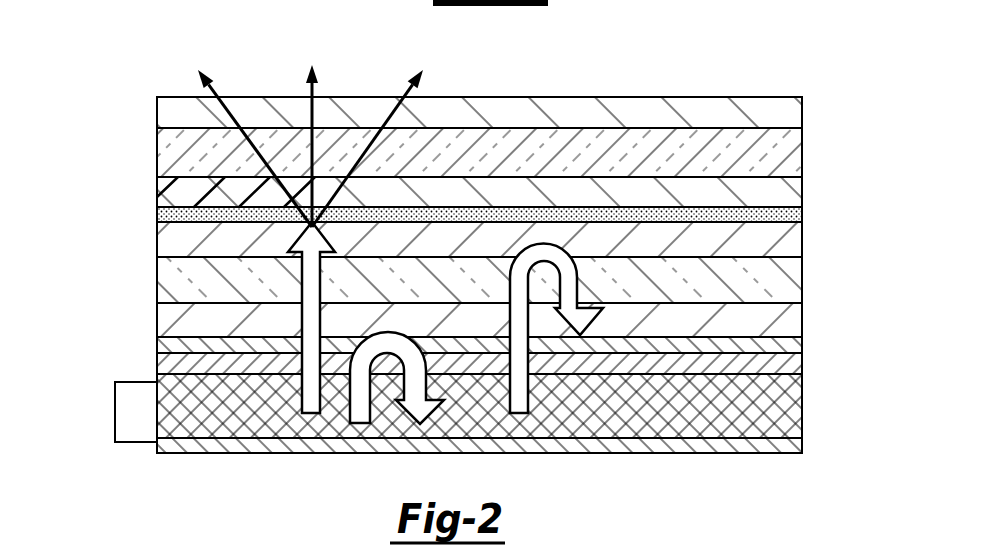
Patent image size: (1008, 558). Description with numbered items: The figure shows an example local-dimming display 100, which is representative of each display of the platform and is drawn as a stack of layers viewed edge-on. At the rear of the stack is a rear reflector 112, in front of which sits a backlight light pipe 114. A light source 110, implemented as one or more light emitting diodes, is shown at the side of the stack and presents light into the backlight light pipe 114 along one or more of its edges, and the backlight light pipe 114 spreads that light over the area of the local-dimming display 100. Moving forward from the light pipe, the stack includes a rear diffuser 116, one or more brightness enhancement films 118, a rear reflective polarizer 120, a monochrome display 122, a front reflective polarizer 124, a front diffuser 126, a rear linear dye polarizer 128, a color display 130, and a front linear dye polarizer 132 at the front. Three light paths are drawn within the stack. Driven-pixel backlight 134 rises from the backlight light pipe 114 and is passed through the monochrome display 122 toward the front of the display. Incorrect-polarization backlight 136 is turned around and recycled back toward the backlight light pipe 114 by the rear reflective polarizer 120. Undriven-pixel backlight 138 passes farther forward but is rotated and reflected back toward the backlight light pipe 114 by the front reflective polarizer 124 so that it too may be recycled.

The local-dimming display 100 is at (177, 30).
The light source 110 is at (115, 413).
The rear reflector 112 is at (772, 446).
The backlight light pipe 114 is at (787, 424).
The rear diffuser 116 is at (787, 361).
The brightness enhancement films 118 is at (787, 347).
The rear reflective polarizer 120 is at (783, 320).
The monochrome display 122 is at (787, 283).
The front reflective polarizer 124 is at (787, 240).
The front diffuser 126 is at (787, 216).
The rear linear dye polarizer 128 is at (787, 189).
The color display 130 is at (787, 152).
The front linear dye polarizer 132 is at (787, 113).
The driven-pixel backlight 134 is at (308, 317).
The incorrect-polarization backlight 136 is at (358, 410).
The undriven-pixel backlight 138 is at (515, 323).